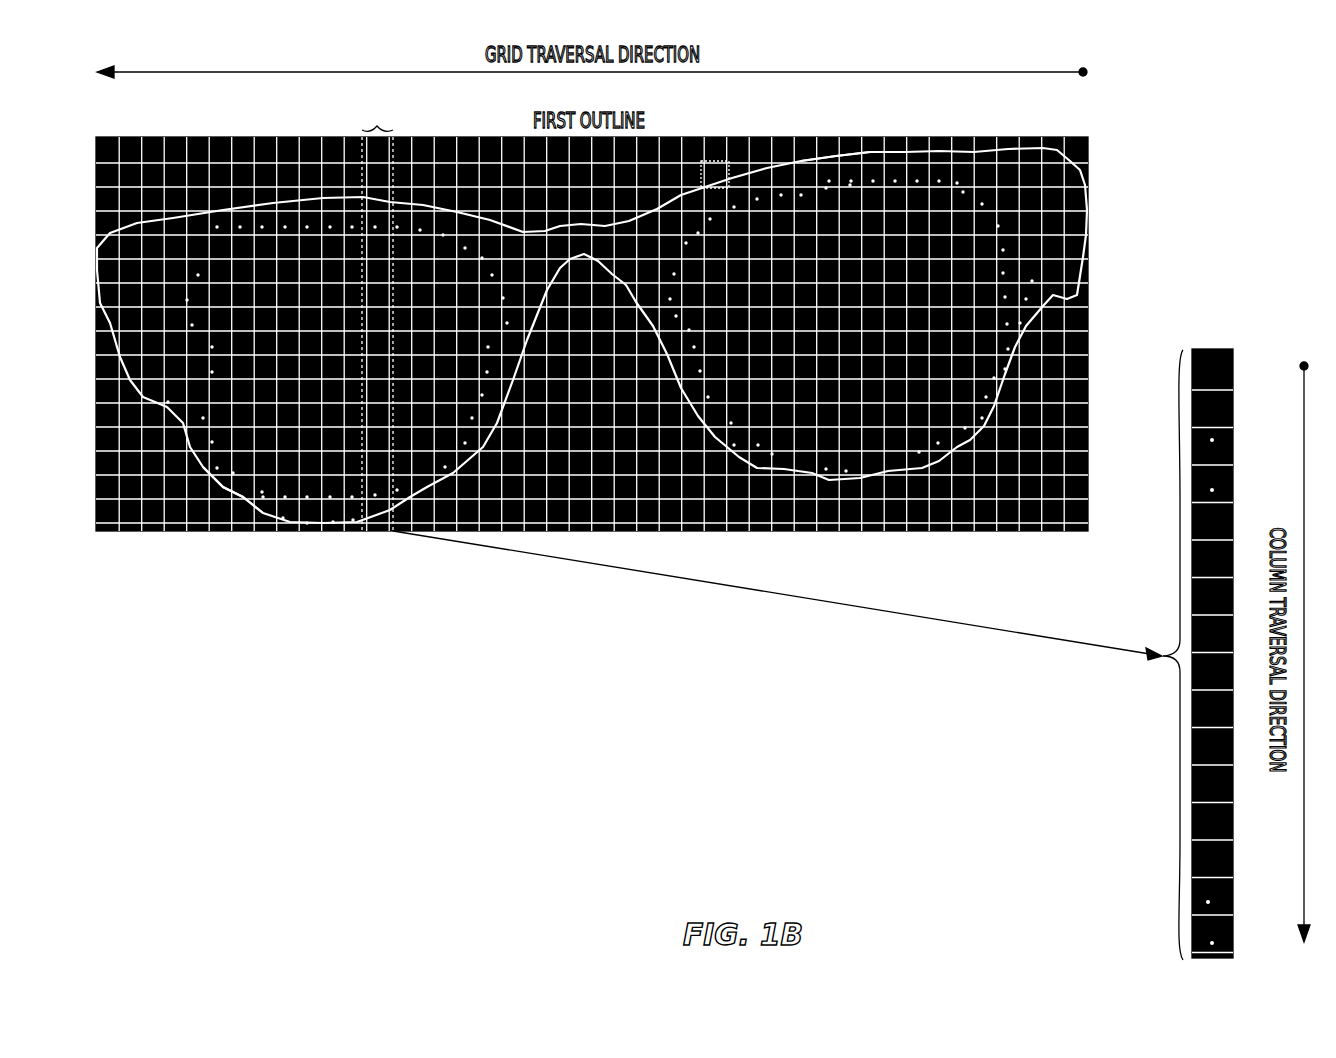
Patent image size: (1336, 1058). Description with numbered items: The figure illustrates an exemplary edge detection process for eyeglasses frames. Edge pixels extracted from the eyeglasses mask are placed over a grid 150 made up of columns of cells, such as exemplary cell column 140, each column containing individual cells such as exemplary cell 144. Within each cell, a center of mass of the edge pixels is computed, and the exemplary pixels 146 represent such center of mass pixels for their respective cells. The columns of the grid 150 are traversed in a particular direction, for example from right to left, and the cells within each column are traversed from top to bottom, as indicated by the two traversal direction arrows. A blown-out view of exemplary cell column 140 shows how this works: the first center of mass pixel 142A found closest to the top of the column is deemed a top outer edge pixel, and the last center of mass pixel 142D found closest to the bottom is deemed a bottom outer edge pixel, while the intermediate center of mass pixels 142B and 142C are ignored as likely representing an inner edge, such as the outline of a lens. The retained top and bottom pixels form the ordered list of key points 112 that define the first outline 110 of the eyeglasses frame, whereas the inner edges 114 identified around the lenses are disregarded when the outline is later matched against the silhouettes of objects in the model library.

The first outline 110 is at (994, 148).
The key points 112 is at (260, 506).
The inner edges 114 is at (243, 493).
The exemplary cell column 140 is at (377, 124).
The center of mass pixel 142A is at (1220, 436).
The center of mass pixel 142B is at (1220, 487).
The center of mass pixel 142C is at (1214, 893).
The center of mass pixel 142D is at (1221, 935).
The exemplary cell 144 is at (719, 150).
The center of mass pixels 146 is at (840, 137).
The grid 150 is at (1115, 158).